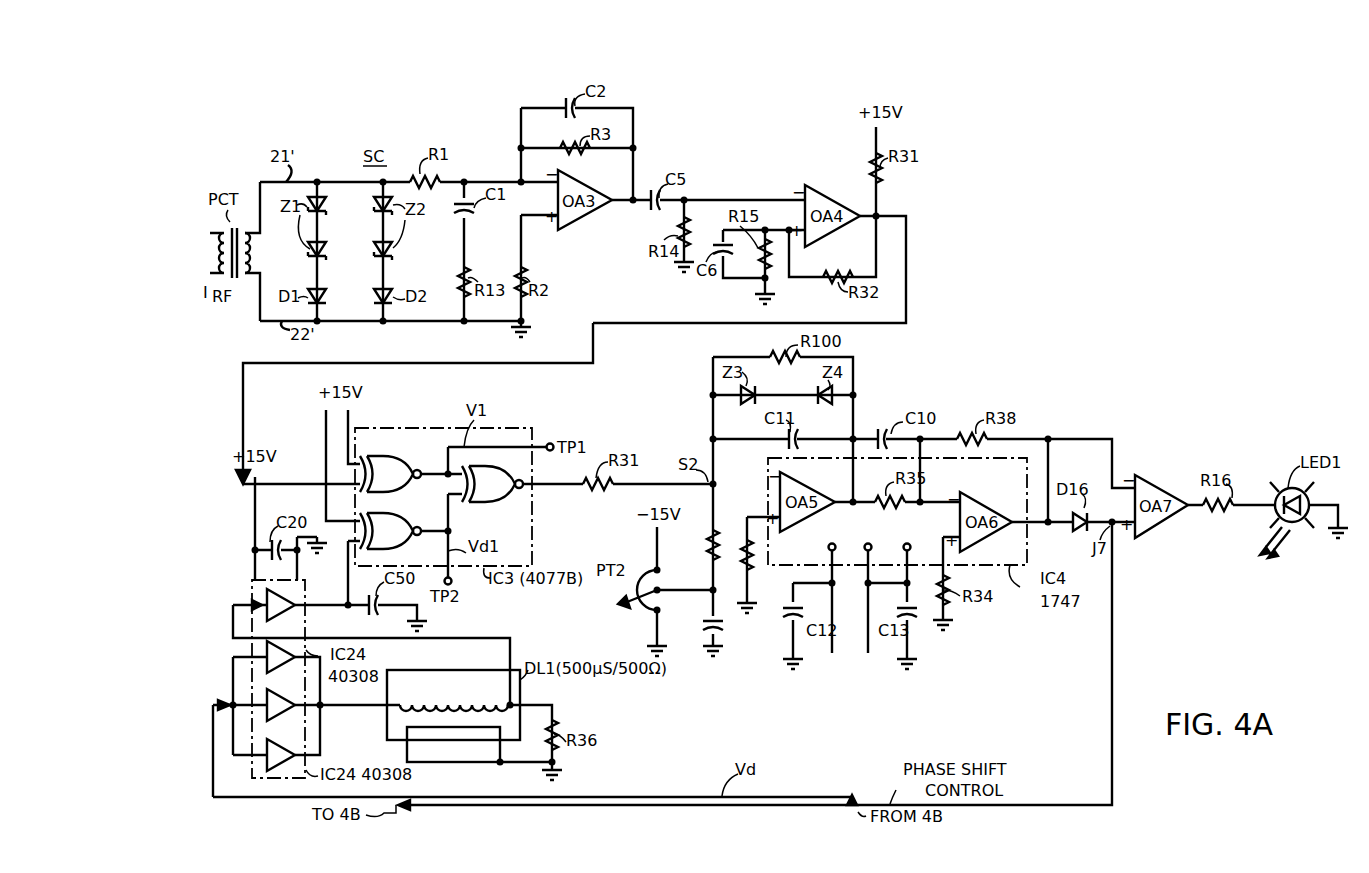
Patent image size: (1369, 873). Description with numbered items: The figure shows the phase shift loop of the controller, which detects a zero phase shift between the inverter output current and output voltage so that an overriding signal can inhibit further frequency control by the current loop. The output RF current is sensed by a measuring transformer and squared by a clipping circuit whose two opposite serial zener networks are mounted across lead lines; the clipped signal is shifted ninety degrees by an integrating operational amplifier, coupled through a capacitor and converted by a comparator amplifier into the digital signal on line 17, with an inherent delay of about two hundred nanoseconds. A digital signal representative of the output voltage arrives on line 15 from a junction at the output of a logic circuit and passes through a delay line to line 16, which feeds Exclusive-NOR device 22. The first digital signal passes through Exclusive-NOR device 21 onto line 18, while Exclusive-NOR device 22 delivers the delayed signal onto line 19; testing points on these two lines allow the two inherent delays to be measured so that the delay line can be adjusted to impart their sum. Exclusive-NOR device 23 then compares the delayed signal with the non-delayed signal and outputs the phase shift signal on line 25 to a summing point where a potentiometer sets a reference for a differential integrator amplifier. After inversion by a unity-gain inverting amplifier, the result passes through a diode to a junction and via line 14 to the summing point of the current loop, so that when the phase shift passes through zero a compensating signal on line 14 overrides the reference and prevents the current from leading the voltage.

The line 14 is at (1112, 754).
The line 15 is at (652, 796).
The line 16 is at (480, 636).
The line 17 is at (242, 402).
The line 18 is at (438, 470).
The line 19 is at (440, 524).
The Exclusive-NOR device 21 is at (392, 462).
The Exclusive-NOR device 22 is at (398, 546).
The Exclusive-NOR device 23 is at (482, 506).
The line 25 is at (541, 486).